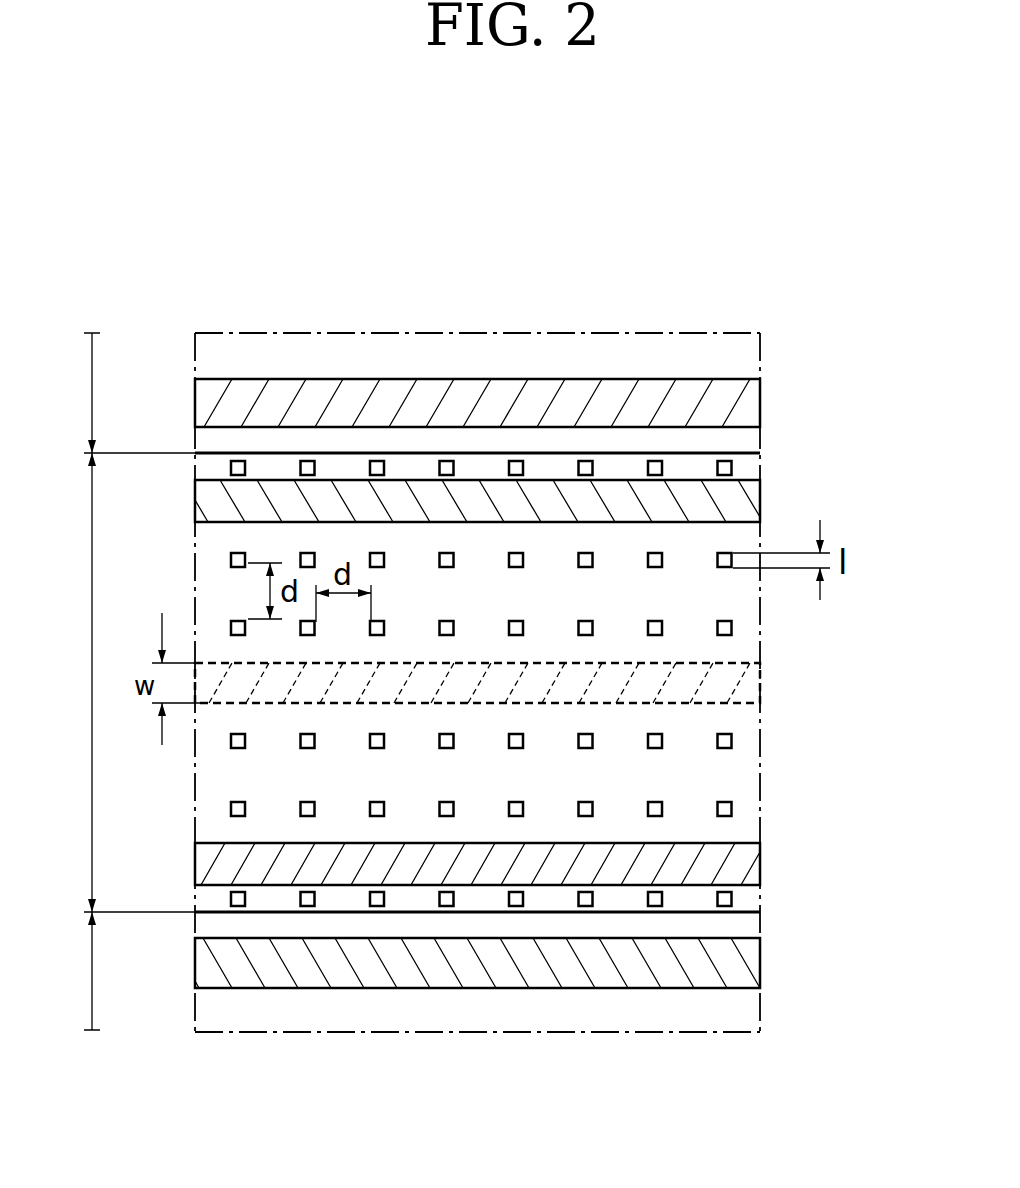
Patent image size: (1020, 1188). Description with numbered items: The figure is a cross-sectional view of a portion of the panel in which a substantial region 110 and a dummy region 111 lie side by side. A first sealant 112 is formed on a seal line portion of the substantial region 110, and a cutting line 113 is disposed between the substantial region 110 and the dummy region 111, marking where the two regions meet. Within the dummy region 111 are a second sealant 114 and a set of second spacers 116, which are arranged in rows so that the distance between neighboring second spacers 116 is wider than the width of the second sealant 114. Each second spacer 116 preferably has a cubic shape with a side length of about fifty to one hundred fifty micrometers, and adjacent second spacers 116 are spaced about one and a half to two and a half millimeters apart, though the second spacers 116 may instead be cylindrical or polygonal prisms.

The substantial region 110 is at (66, 681).
The dummy region 111 is at (64, 682).
The first sealant 112 is at (740, 403).
The cutting line 113 is at (740, 456).
The second sealant 114 is at (740, 510).
The second spacers 116 is at (733, 628).